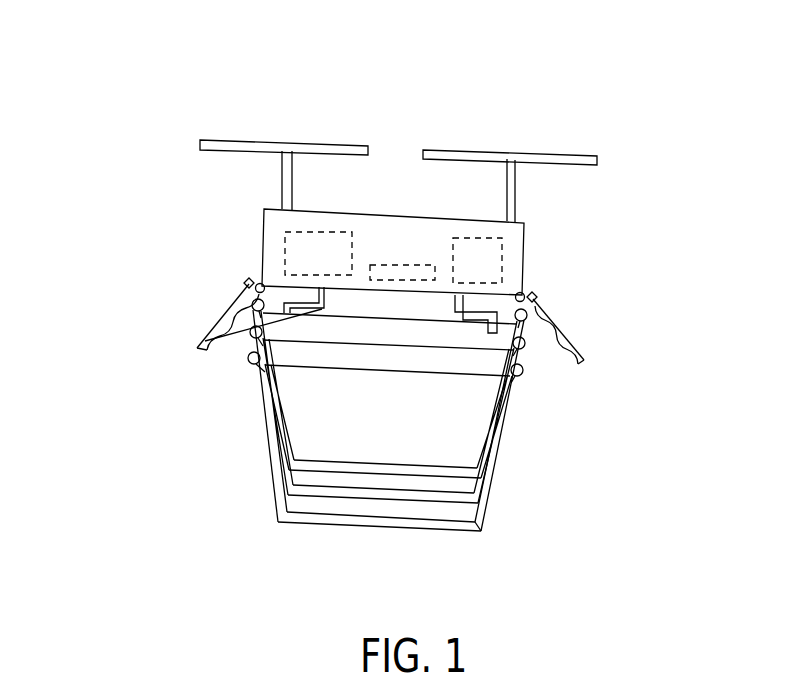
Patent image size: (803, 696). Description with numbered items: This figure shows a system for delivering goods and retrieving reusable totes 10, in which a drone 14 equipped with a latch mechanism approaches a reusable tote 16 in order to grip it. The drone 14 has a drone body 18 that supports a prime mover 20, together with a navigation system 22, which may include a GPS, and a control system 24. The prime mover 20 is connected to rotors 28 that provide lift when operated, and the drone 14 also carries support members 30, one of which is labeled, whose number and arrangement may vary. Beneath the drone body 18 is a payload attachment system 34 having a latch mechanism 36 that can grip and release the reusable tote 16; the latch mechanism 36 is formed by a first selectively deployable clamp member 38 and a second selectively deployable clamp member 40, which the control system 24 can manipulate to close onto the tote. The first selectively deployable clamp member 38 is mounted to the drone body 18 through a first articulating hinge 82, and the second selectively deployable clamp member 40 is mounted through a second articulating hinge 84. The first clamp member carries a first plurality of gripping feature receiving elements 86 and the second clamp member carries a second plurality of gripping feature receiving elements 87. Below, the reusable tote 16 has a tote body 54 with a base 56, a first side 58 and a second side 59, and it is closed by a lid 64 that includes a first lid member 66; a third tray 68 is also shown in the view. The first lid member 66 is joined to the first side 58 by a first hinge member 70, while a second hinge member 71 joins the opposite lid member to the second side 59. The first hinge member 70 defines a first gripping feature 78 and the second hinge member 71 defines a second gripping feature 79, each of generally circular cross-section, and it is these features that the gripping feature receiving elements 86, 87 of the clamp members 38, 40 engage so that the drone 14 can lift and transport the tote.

The system for delivering goods and retrieving reusable totes 10 is at (137, 102).
The drone 14 is at (580, 262).
The reusable tote 16 is at (612, 457).
The drone body 18 is at (532, 228).
The prime mover 20 is at (285, 250).
The navigation system 22 is at (433, 267).
The control system 24 is at (503, 255).
The rotors 28 is at (424, 130).
The support members 30 is at (256, 330).
The payload attachment system 34 is at (588, 365).
The latch mechanism 36 is at (215, 308).
The first selectively deployable clamp member 38 is at (208, 323).
The second selectively deployable clamp member 40 is at (565, 333).
The tote body 54 is at (479, 535).
The base 56 is at (323, 527).
The first side 58 is at (276, 504).
The second side 59 is at (483, 518).
The lid 64 is at (252, 462).
The first lid member 66 is at (270, 407).
The third tray 68 is at (495, 472).
The first hinge member 70 is at (248, 367).
The second hinge member 71 is at (522, 385).
The first gripping feature 78 is at (272, 370).
The second gripping feature 79 is at (510, 372).
The first articulating hinge 82 is at (246, 281).
The second articulating hinge 84 is at (538, 299).
The first plurality of gripping feature receiving elements 86 is at (210, 347).
The second plurality of gripping feature receiving elements 87 is at (533, 330).